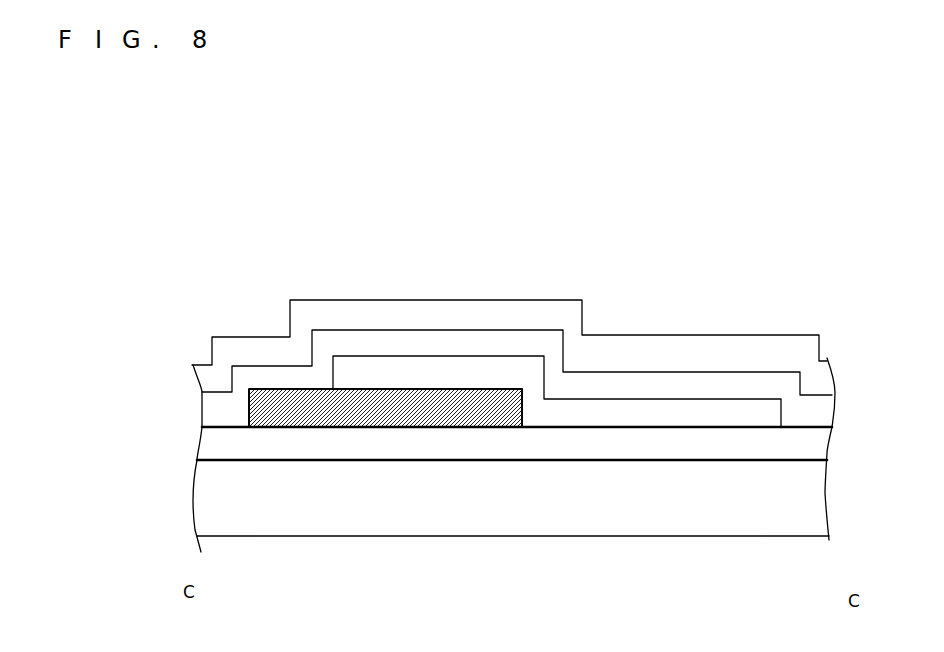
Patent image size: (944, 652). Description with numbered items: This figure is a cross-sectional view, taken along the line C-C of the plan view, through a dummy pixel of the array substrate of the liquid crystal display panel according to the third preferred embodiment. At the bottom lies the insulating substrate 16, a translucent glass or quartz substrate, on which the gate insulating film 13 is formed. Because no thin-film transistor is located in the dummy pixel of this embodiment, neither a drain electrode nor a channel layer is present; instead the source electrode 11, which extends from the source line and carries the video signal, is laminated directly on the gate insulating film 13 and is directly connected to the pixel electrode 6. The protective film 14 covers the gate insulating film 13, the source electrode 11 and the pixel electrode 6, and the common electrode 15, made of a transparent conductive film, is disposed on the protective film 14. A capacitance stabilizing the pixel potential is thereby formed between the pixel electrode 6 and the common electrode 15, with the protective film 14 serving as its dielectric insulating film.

The pixel electrode 6 is at (678, 415).
The source electrode 11 is at (482, 398).
The gate insulating film 13 is at (334, 442).
The protective film 14 is at (387, 350).
The common electrode 15 is at (613, 357).
The insulating substrate 16 is at (503, 525).